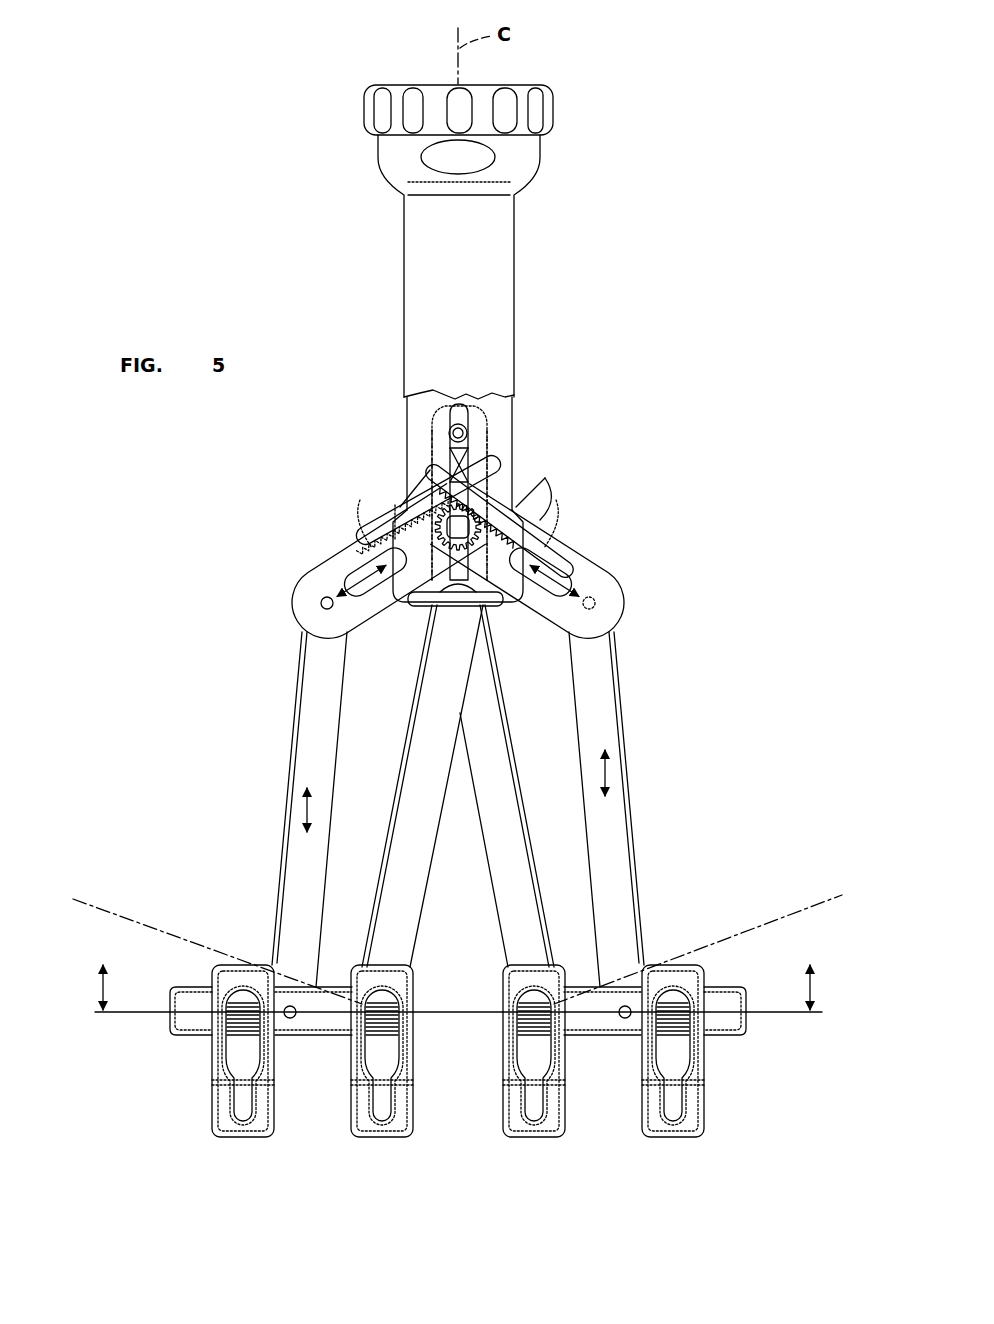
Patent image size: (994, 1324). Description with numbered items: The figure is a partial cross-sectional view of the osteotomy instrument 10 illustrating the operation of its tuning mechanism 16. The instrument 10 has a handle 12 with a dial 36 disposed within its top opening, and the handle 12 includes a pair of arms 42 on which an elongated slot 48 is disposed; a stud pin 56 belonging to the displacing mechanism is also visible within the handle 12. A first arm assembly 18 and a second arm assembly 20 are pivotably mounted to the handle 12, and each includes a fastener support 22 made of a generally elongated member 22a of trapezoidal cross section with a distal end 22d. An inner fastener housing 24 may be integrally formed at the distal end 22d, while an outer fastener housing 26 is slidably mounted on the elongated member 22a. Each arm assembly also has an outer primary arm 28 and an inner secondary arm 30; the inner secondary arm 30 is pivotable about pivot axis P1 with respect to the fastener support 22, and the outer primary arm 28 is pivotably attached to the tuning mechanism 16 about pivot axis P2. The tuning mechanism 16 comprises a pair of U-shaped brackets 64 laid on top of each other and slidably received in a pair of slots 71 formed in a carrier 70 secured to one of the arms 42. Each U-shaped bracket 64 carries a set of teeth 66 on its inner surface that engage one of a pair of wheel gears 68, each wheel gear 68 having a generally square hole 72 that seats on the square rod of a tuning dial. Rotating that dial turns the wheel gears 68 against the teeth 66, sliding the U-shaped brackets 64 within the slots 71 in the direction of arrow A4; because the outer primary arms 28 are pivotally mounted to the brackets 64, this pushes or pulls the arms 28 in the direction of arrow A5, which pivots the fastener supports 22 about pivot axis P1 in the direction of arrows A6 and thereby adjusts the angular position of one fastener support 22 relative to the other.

The osteotomy instrument 10 is at (712, 200).
The handle 12 is at (516, 268).
The tuning mechanism 16 is at (586, 490).
The first arm assembly 18 is at (712, 692).
The second arm assembly 20 is at (197, 687).
The fastener support 22 is at (457, 946).
The elongated member 22a is at (180, 1000).
The distal end 22d is at (460, 1003).
The inner fastener housing 24 is at (360, 957).
The outer fastener housing 26 is at (242, 952).
The outer primary arm 28 is at (281, 832).
The inner secondary arm 30 is at (483, 877).
The dial 36 is at (549, 89).
The pair of arms 42 is at (503, 447).
The elongated slot 48 is at (457, 406).
The stud pin 56 is at (466, 430).
The U-shaped bracket 64 is at (338, 566).
The teeth 66 is at (358, 545).
The wheel gear 68 is at (465, 520).
The carrier 70 is at (362, 514).
The slot 71 is at (398, 508).
The hole 72 is at (490, 510).
The arrow A4 is at (340, 583).
The arrow A5 is at (308, 808).
The arrows A6 is at (826, 972).
The pivot axis P1 is at (383, 1010).
The pivot axis P2 is at (320, 603).